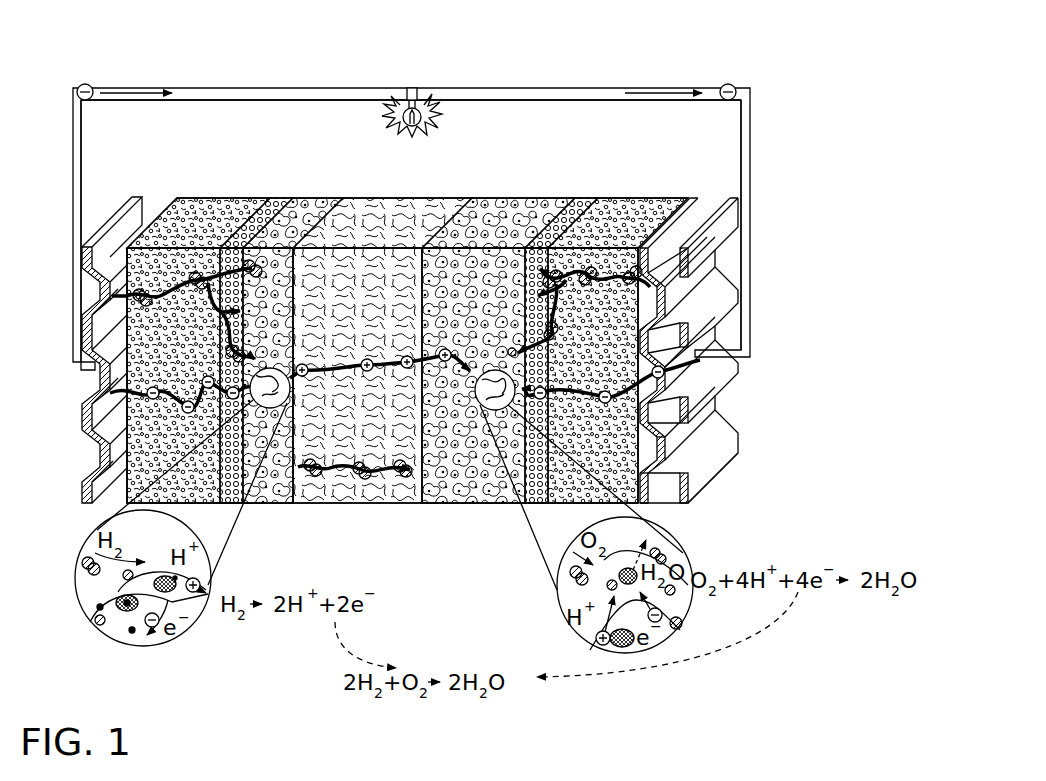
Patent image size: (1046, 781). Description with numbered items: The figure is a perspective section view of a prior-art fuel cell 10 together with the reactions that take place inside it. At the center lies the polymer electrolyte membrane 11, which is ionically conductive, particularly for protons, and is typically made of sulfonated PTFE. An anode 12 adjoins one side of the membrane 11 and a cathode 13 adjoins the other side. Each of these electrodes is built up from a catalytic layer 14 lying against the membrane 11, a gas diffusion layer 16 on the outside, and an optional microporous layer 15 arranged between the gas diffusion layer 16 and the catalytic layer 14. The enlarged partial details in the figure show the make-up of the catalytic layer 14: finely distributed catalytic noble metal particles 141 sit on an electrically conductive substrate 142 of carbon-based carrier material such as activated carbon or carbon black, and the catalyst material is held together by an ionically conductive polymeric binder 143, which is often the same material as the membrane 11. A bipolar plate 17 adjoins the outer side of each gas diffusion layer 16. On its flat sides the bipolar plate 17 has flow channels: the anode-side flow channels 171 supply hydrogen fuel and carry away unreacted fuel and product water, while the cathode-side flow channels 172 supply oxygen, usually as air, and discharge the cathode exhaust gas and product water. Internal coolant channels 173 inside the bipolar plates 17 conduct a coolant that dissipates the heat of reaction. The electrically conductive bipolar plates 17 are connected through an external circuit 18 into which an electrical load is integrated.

The fuel cell 10 is at (133, 70).
The polymer electrolyte membrane 11 is at (395, 209).
The anode 12 is at (332, 148).
The cathode 13 is at (482, 148).
The catalytic layer 14 is at (312, 209).
The microporous layer 15 is at (275, 198).
The gas diffusion layer 16 is at (213, 207).
The bipolar plate 17 is at (153, 207).
The external circuit 18 is at (556, 91).
The catalytic noble metal particles 141 is at (126, 606).
The electrically conductive substrate 142 is at (134, 633).
The ionically conductive polymeric binder 143 is at (98, 609).
The anode-side flow channels 171 is at (680, 368).
The cathode-side flow channels 172 is at (650, 466).
The internal coolant channels 173 is at (670, 426).